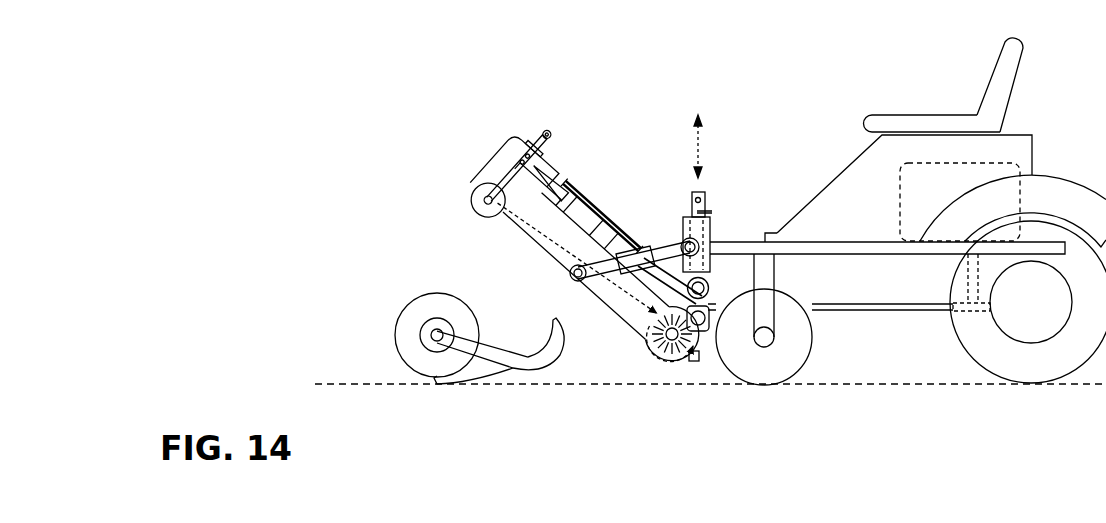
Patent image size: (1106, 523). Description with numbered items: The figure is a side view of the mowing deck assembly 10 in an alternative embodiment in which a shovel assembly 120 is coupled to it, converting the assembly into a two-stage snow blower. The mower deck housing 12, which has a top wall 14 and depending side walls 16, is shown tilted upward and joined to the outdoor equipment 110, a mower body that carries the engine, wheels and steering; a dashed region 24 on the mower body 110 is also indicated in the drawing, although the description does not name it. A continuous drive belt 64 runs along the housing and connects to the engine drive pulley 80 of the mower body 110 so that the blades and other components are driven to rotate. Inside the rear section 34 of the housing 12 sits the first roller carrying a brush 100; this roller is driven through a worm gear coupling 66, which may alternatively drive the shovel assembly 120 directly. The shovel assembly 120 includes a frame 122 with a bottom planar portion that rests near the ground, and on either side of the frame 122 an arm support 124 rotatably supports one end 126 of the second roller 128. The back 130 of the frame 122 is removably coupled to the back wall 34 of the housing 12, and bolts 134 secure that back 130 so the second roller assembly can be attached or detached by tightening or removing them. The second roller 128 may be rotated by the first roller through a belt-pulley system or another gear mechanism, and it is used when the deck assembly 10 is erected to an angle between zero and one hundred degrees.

The mowing deck assembly 10 is at (567, 110).
The mower deck housing 12 is at (514, 230).
The top wall 14 is at (650, 292).
The side walls 16 is at (547, 245).
The engine compartment 24 is at (1013, 163).
The rear section 34 is at (702, 337).
The continuous drive belt 64 is at (583, 185).
The worm gear coupling 66 is at (670, 290).
The engine drive pulley 80 is at (973, 308).
The brush 100 is at (673, 347).
The outdoor equipment 110 is at (828, 172).
The shovel assembly 120 is at (491, 325).
The frame 122 is at (557, 362).
The arm support 124 is at (510, 350).
The end of the second roller 126 is at (437, 335).
The second roller 128 is at (443, 305).
The back of the frame 130 is at (562, 322).
The bolts 134 is at (695, 362).